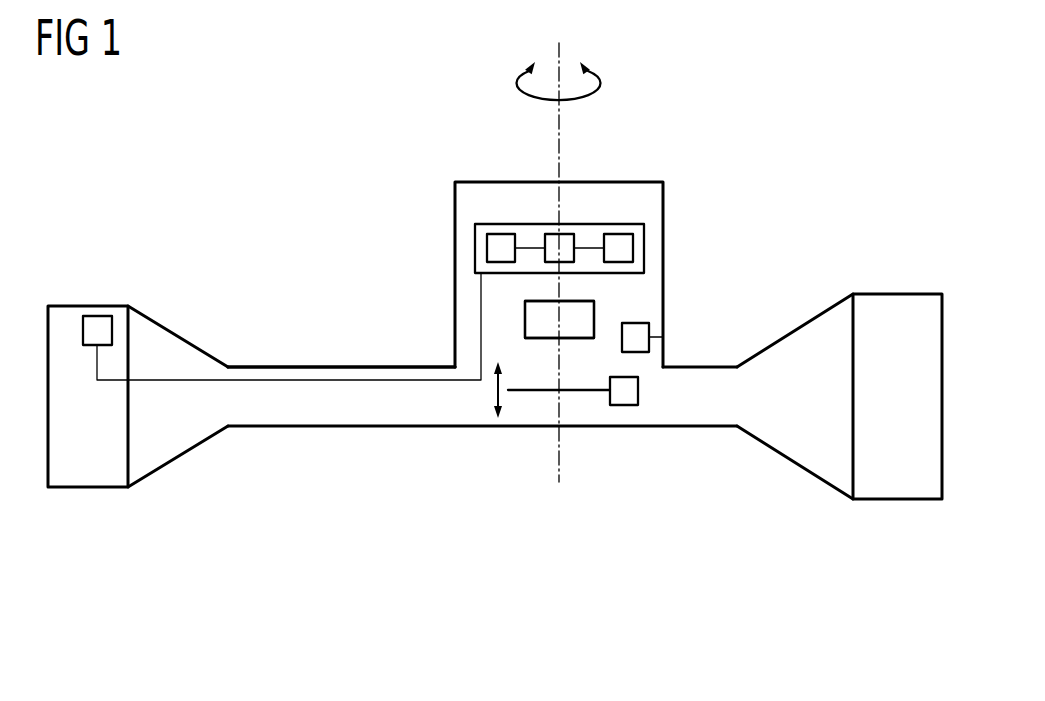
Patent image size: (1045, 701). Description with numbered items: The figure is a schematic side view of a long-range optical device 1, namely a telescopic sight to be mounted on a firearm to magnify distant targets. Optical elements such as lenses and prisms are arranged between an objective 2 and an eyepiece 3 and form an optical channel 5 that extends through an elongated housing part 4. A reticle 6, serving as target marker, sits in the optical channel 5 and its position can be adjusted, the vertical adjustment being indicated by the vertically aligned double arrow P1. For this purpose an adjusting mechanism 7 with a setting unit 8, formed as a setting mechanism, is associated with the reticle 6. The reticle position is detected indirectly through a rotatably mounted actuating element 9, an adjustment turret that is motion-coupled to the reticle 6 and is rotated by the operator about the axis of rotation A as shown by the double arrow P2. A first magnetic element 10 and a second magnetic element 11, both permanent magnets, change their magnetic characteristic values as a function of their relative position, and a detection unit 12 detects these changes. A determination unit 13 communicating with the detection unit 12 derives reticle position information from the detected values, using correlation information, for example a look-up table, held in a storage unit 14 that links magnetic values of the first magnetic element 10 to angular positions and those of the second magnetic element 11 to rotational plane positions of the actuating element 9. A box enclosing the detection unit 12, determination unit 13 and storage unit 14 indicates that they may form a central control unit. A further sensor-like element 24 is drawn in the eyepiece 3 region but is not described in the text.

The long-range optical device 1 is at (771, 156).
The objective 2 is at (897, 268).
The eyepiece 3 is at (72, 282).
The housing part 4 is at (305, 366).
The optical channel 5 is at (293, 438).
The reticle 6 is at (530, 393).
The adjusting mechanism 7 is at (525, 323).
The setting unit 8 is at (559, 319).
The actuating element 9 is at (470, 181).
The first magnetic element 10 is at (663, 333).
The second magnetic element 11 is at (625, 405).
The detection unit 12 is at (620, 224).
The determination unit 13 is at (567, 224).
The storage unit 14 is at (503, 224).
The sensor element 24 is at (103, 316).
The axis of rotation A is at (565, 50).
The double arrow P1 is at (497, 390).
The double arrow P2 is at (593, 73).